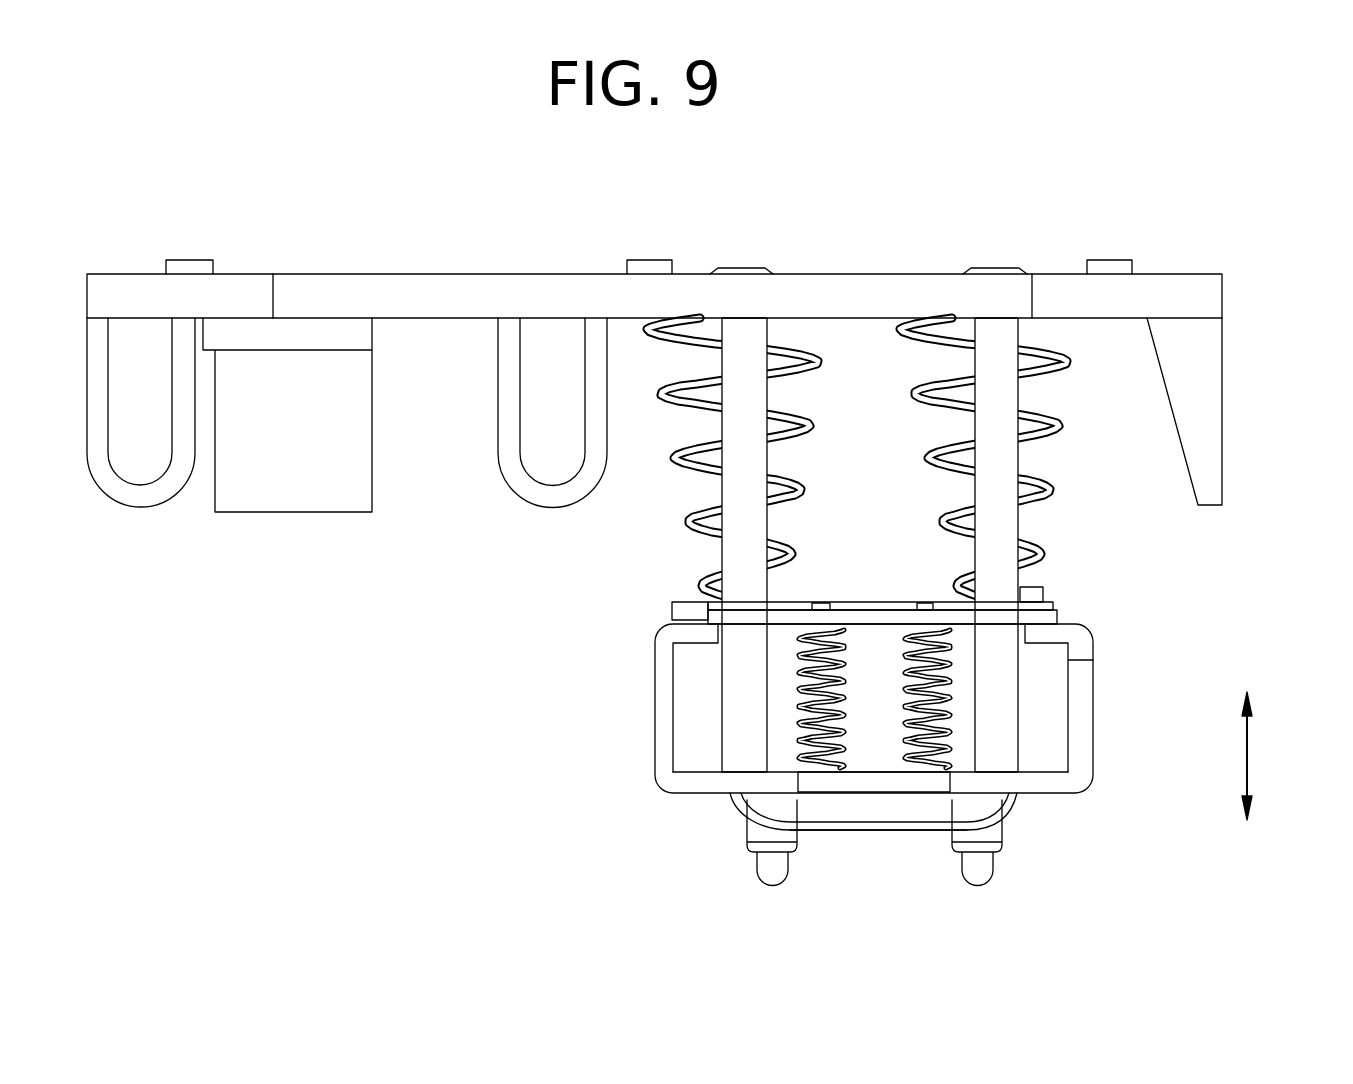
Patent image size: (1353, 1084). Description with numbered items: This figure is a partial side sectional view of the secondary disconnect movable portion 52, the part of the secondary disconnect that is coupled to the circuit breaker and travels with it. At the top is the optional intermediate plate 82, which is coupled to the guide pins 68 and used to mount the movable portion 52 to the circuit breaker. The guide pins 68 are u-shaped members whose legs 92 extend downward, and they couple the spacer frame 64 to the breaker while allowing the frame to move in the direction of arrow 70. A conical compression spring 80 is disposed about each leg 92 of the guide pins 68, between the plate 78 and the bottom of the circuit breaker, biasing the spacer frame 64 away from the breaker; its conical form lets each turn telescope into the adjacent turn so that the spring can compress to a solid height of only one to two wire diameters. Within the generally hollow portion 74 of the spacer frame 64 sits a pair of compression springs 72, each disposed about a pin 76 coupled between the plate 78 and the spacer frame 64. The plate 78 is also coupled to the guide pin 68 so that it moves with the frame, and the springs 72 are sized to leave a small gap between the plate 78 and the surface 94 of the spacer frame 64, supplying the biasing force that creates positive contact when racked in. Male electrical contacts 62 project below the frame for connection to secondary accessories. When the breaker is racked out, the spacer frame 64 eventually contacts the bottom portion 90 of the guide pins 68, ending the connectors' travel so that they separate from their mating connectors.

The secondary disconnect movable portion 52 is at (340, 733).
The male electrical contacts 62 is at (760, 882).
The spacer frame 64 is at (1095, 740).
The guide pin 68 is at (1017, 800).
The arrow 70 is at (1247, 750).
The compression springs 72 is at (947, 712).
The hollow portion 74 is at (692, 707).
The pins 76 is at (905, 668).
The plate 78 is at (1050, 595).
The compression spring 80 is at (1052, 378).
The intermediate plate 82 is at (470, 272).
The bottom portion 90 is at (890, 832).
The legs 92 is at (973, 356).
The surface 94 is at (665, 624).